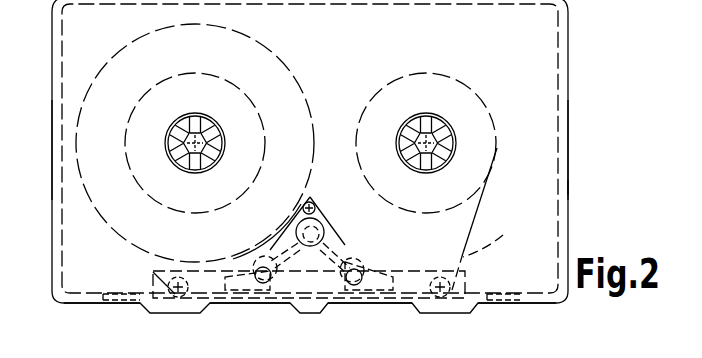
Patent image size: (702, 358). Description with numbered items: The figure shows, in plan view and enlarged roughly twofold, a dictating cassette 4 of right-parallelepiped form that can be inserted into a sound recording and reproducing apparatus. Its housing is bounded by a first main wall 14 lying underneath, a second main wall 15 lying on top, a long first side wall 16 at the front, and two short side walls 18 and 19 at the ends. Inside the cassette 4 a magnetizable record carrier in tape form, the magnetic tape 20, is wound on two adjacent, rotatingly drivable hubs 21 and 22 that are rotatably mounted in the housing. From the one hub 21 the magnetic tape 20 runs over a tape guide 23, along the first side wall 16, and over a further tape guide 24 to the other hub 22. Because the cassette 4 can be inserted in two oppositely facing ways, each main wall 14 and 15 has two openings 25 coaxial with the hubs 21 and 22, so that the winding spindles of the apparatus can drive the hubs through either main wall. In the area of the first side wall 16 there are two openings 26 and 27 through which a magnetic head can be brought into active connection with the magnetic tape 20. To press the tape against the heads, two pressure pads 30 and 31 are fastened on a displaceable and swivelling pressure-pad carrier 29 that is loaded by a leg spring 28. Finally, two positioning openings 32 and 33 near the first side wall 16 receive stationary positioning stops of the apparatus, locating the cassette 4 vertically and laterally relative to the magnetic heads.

The cassette 4 is at (572, 187).
The first main wall 14 is at (538, 63).
The second main wall 15 is at (78, 48).
The first side wall 16 is at (525, 305).
The short side wall 18 is at (52, 186).
The short side wall 19 is at (568, 156).
The magnetic tape 20 is at (472, 254).
The hub 21 is at (220, 83).
The hub 22 is at (447, 87).
The tape guide 23 is at (183, 300).
The further tape guide 24 is at (443, 300).
The openings 25 is at (225, 143).
The opening 26 is at (257, 303).
The opening 27 is at (375, 303).
The leg spring 28 is at (315, 203).
The pressure-pad carrier 29 is at (318, 258).
The pressure pad 30 is at (223, 297).
The pressure pad 31 is at (363, 292).
The positioning opening 32 is at (128, 301).
The positioning opening 33 is at (498, 303).